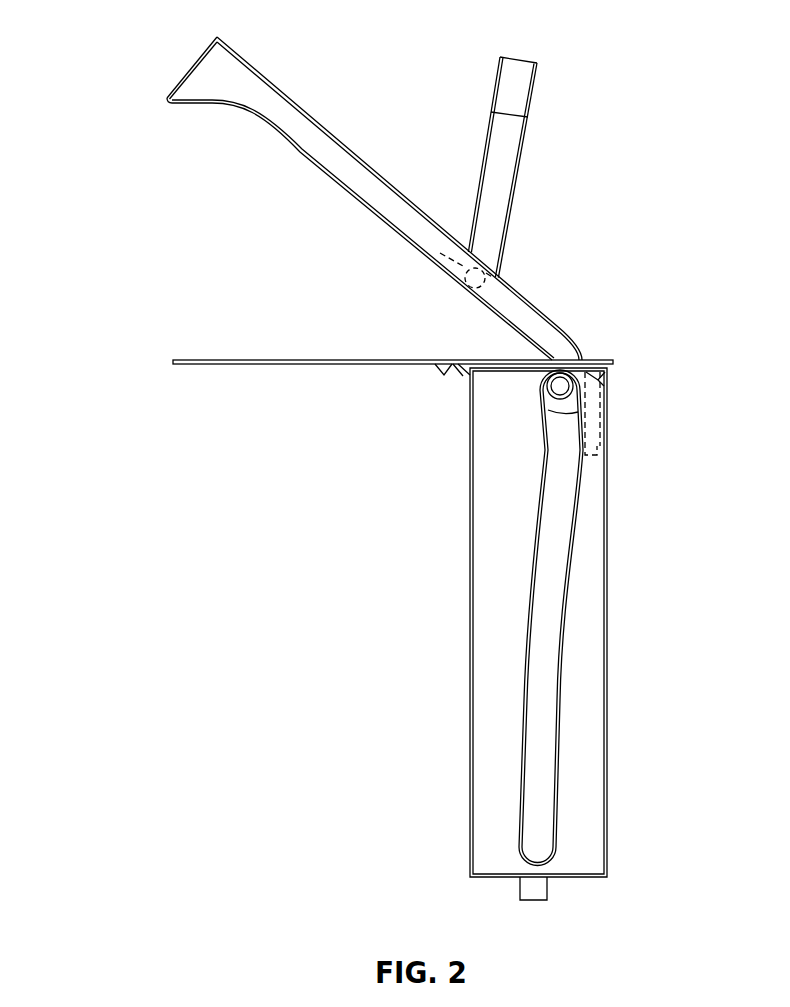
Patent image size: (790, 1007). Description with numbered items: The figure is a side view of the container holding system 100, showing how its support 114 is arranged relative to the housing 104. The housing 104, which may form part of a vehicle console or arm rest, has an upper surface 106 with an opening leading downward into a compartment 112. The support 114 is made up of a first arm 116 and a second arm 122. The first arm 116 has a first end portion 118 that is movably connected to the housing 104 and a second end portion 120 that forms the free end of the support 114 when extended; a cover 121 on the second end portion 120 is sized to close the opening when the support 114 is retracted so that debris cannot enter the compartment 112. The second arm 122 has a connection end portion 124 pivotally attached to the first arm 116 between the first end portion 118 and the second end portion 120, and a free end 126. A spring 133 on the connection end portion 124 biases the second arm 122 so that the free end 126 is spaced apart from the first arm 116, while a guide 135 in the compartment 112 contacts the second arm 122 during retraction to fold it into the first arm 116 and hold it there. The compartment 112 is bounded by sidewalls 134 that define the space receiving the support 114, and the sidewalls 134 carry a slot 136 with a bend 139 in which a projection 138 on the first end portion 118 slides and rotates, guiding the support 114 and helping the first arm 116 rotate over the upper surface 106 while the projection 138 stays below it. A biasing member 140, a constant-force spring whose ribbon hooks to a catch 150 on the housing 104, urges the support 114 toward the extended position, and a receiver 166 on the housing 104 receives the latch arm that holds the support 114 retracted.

The container holding system 100 is at (384, 481).
The housing 104 is at (527, 642).
The upper surface 106 is at (318, 381).
The compartment 112 is at (458, 622).
The support 114 is at (308, 191).
The first arm 116 is at (423, 237).
The first end portion 118 is at (576, 402).
The second end portion 120 is at (203, 53).
The cover 121 is at (181, 80).
The second arm 122 is at (546, 154).
The connection end portion 124 is at (500, 273).
The free end 126 is at (522, 58).
The spring 133 is at (497, 243).
The sidewalls 134 is at (495, 657).
The guide 135 is at (592, 373).
The slot 136 is at (568, 618).
The projection 138 is at (573, 384).
The bend 139 is at (545, 440).
The biasing member 140 is at (457, 370).
The catch 150 is at (437, 372).
The receiver 166 is at (548, 898).